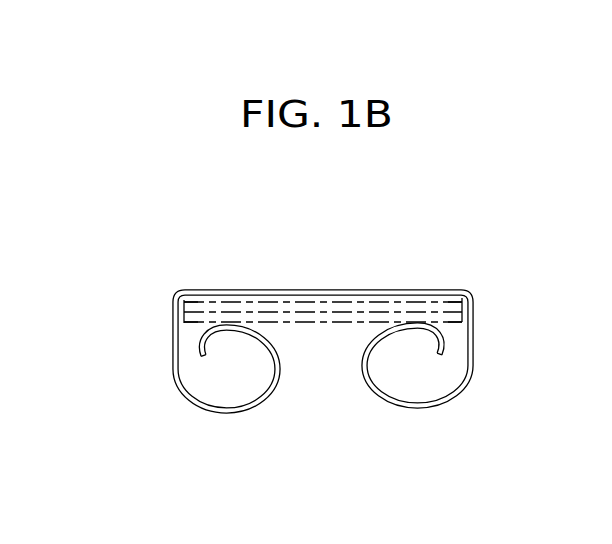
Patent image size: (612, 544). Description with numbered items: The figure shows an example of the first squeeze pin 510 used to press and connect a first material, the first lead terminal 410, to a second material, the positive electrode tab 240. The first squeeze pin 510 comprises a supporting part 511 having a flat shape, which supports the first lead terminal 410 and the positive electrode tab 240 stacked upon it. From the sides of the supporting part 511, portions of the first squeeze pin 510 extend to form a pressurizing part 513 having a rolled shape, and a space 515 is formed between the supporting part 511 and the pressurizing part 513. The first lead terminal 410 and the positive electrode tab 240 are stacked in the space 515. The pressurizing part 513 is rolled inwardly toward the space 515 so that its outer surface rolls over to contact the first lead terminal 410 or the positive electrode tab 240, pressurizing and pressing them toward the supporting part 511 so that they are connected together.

The first squeeze pin 510 is at (327, 327).
The supporting part 511 is at (275, 289).
The pressurizing part 513 is at (223, 412).
The space 515 is at (310, 321).
The first lead terminal 410 is at (254, 291).
The positive electrode tab 240 is at (184, 313).